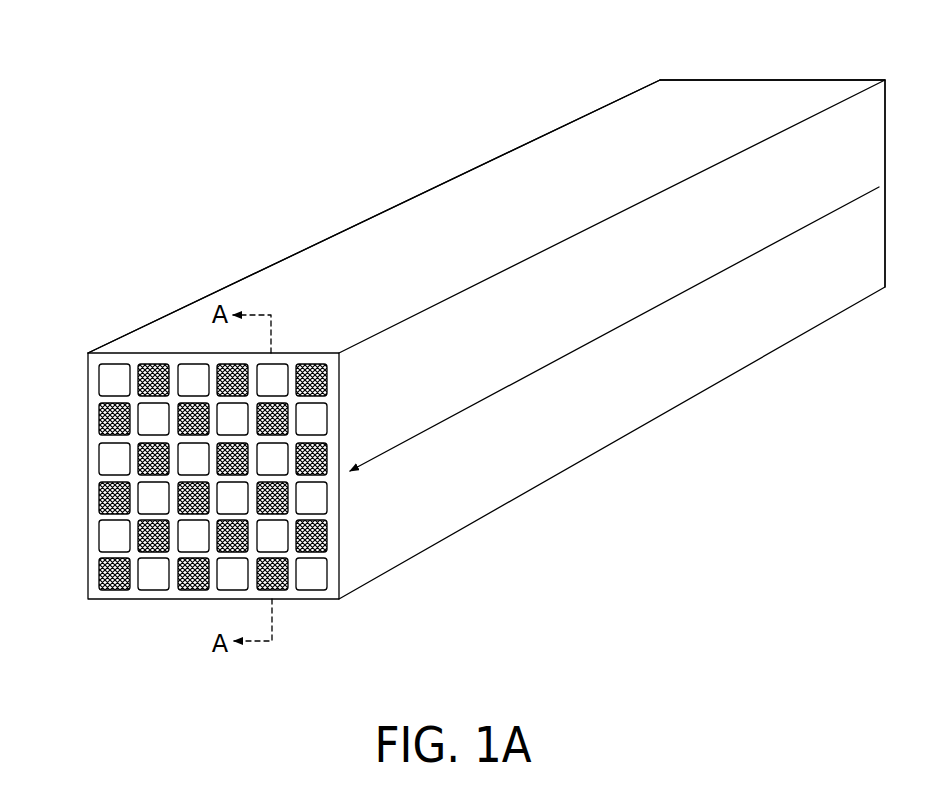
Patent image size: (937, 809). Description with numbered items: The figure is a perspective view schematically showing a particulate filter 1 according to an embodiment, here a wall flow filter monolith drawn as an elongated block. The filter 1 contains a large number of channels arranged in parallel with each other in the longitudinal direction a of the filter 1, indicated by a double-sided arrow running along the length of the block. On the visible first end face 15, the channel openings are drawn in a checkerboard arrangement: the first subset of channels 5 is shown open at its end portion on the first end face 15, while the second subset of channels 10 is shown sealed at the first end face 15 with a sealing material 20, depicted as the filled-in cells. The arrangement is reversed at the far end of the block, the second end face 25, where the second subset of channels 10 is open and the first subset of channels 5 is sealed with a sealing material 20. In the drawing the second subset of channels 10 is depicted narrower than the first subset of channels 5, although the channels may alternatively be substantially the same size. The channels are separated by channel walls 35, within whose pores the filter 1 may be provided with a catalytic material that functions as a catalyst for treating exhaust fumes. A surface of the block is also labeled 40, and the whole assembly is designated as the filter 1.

The particulate filter 1 is at (96, 130).
The first subset of channels 5 is at (153, 580).
The second subset of channels 10 is at (100, 497).
The first end face 15 is at (93, 405).
The sealing material 20 is at (100, 570).
The second end face 25 is at (773, 80).
The channel wall 35 is at (298, 558).
The outer peripheral surface 40 is at (440, 198).
The longitudinal direction a is at (614, 329).